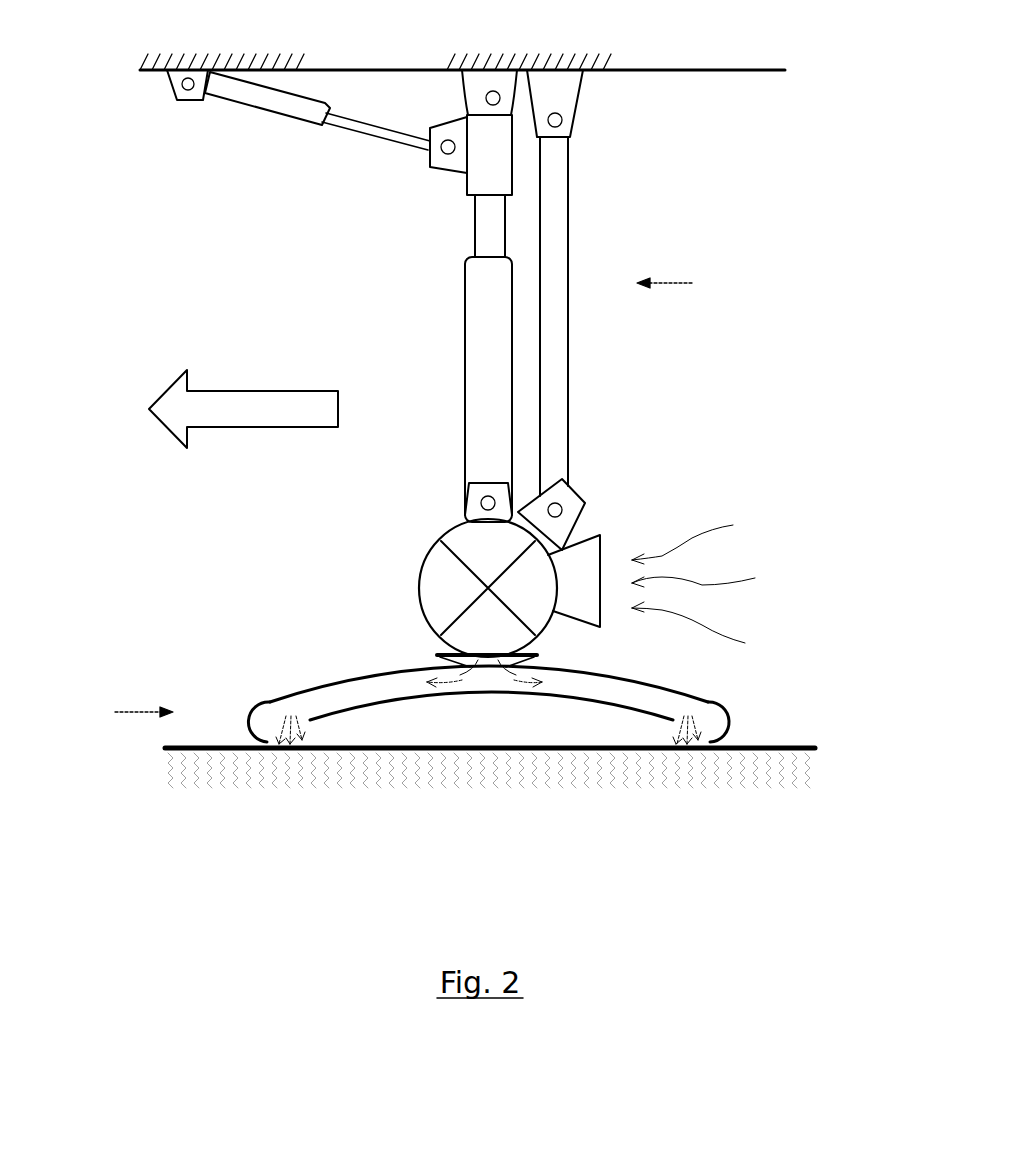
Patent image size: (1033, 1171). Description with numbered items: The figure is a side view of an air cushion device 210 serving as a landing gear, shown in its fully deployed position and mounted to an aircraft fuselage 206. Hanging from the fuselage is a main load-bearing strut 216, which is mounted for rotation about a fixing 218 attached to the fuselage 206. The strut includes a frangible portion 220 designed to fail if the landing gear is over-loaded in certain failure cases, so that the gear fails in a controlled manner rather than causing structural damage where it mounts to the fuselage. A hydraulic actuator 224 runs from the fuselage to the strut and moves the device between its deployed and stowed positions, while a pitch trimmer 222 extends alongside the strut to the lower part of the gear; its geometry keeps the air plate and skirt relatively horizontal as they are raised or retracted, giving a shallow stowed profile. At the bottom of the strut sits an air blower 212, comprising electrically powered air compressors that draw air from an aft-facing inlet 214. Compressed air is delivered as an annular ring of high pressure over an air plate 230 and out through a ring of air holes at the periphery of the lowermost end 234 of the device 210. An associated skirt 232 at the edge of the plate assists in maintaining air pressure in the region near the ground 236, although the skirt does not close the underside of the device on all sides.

The aircraft fuselage 206 is at (735, 36).
The air cushion device 210 is at (697, 284).
The air blower 212 is at (432, 580).
The aft-facing inlet 214 is at (582, 558).
The main load-bearing strut 216 is at (482, 305).
The fixing 218 is at (480, 80).
The frangible portion 220 is at (488, 220).
The pitch trimmer 222 is at (557, 187).
The hydraulic actuator 224 is at (262, 100).
The air plate 230 is at (503, 692).
The skirt 232 is at (730, 718).
The lowermost end 234 is at (112, 711).
The ground 236 is at (602, 830).